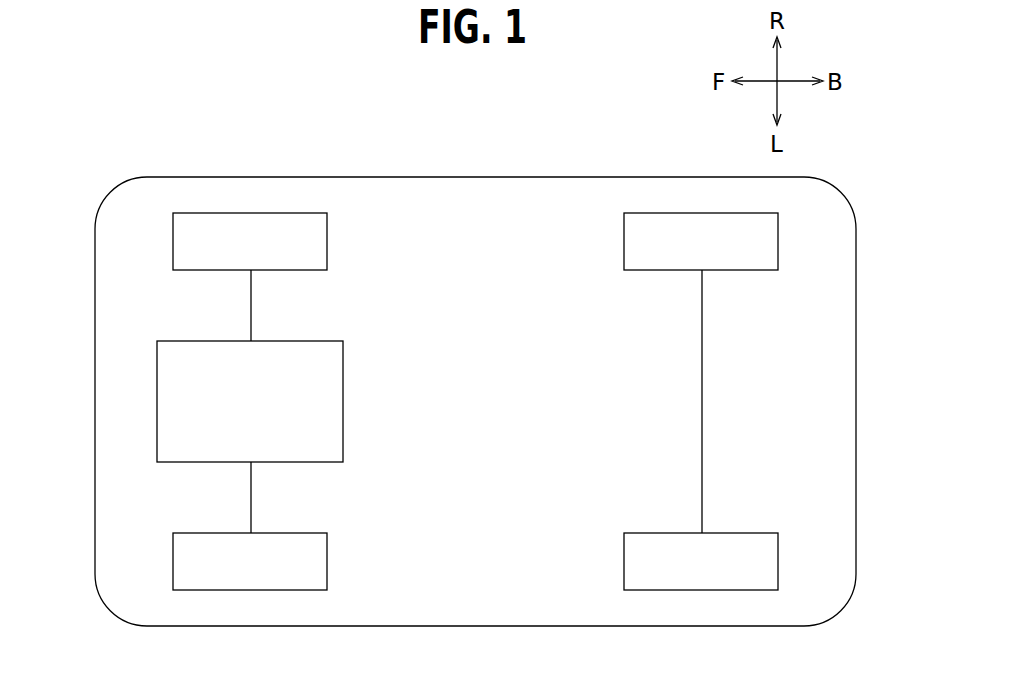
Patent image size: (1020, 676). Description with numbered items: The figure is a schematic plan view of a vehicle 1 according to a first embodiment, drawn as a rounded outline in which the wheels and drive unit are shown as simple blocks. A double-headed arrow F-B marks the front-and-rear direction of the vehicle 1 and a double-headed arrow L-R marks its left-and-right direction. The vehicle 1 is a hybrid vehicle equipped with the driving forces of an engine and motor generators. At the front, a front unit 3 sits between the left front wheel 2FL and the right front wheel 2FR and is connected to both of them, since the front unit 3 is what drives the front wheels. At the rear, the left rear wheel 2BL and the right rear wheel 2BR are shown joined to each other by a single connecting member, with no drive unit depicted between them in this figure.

The vehicle 1 is at (198, 140).
The right front wheel 2FR is at (173, 238).
The left front wheel 2FL is at (173, 558).
The right rear wheel 2BR is at (778, 238).
The left rear wheel 2BL is at (778, 558).
The front unit 3 is at (157, 397).